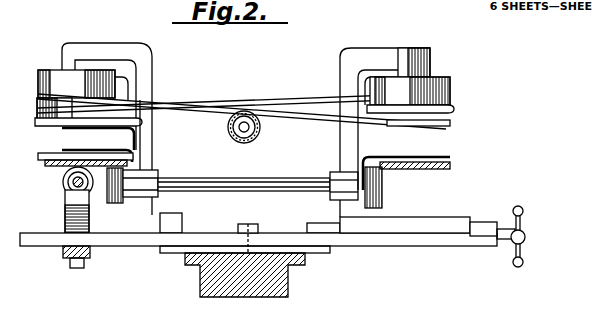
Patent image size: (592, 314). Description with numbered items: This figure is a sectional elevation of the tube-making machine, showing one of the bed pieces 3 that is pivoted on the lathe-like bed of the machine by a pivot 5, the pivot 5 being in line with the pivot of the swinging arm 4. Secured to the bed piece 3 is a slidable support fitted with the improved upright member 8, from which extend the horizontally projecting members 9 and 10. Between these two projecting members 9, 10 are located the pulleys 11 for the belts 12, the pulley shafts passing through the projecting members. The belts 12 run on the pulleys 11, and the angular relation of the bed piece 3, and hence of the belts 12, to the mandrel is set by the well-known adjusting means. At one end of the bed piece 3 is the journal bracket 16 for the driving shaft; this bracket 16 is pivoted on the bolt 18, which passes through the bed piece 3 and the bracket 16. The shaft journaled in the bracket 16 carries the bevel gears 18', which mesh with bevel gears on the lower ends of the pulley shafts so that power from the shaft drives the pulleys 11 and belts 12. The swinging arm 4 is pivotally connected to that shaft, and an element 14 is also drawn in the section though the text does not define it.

The bed piece 3 is at (362, 244).
The swinging arm 4 is at (412, 224).
The pivot 5 is at (250, 229).
The upright member 8 is at (342, 146).
The horizontally projecting member 9 is at (432, 157).
The horizontally projecting member 10 is at (381, 56).
The pulley 11 is at (440, 91).
The belt 12 is at (298, 106).
The cam 14 is at (70, 186).
The journal bracket 16 is at (70, 212).
The bolt 18 is at (76, 267).
The bevel gear 18' is at (48, 178).